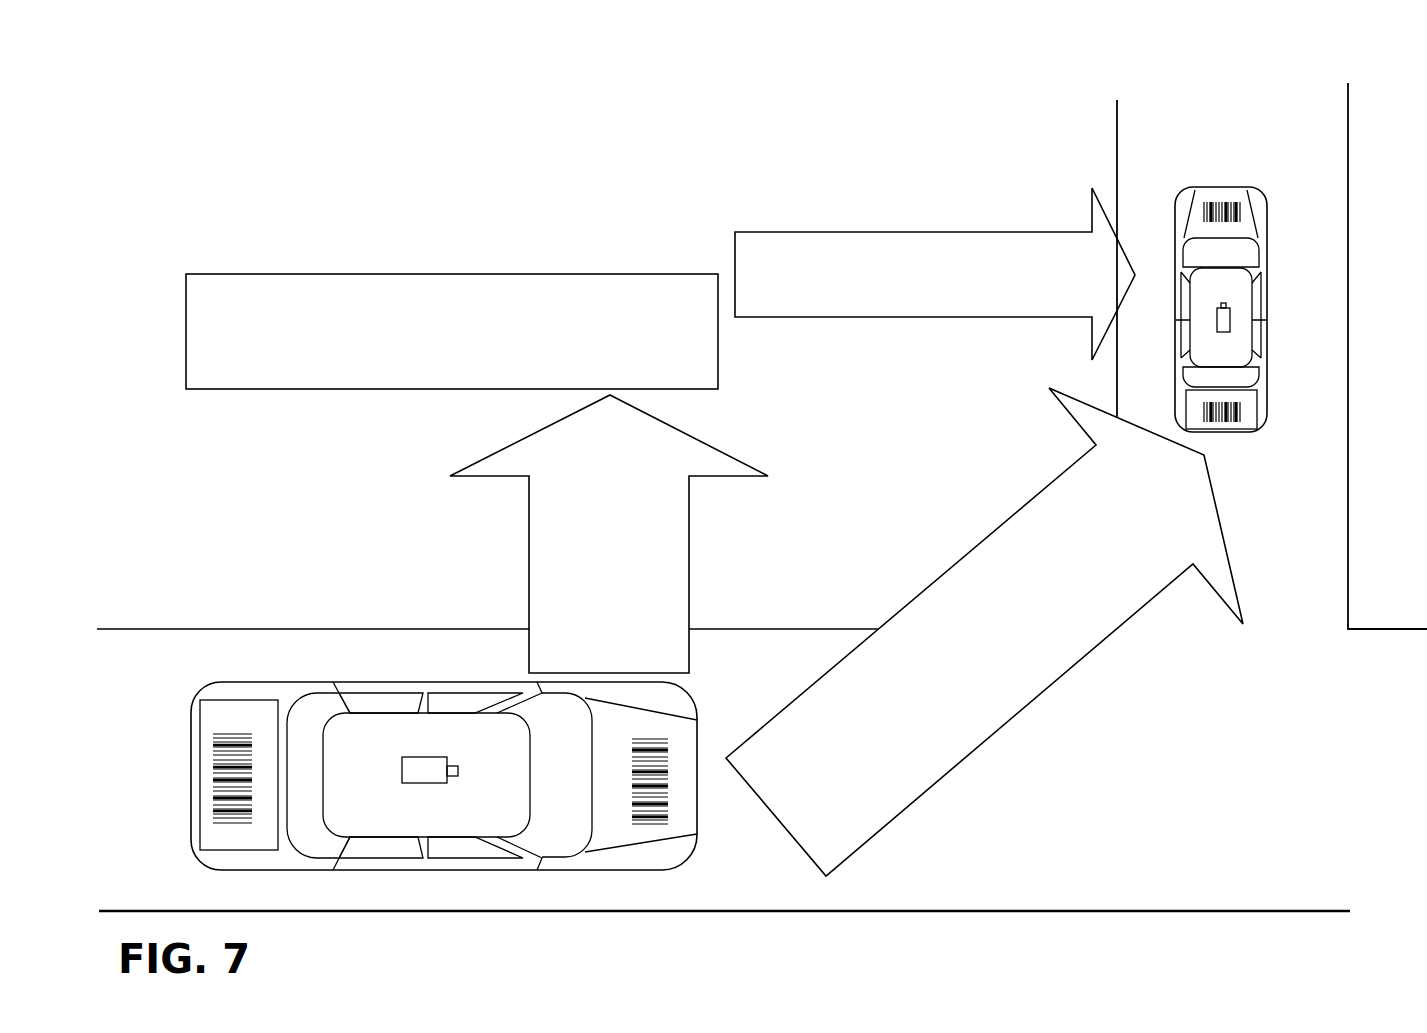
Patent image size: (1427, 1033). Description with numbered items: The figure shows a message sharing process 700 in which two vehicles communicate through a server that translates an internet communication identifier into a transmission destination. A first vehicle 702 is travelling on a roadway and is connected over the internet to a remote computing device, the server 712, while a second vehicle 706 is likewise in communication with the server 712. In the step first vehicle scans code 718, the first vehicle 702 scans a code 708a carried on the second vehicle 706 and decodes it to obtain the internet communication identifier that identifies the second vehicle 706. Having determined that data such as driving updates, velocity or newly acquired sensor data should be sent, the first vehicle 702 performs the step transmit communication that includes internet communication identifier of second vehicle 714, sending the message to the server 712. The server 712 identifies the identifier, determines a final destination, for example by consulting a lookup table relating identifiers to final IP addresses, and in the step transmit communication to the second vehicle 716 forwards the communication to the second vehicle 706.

The message sharing process 700 is at (206, 77).
The first vehicle 702 is at (192, 840).
The second vehicle 706 is at (1280, 315).
The code 708a is at (1243, 402).
The server 712 is at (452, 331).
The transmit communication that includes internet communication identifier of second 714 is at (690, 573).
The transmit communication to the second vehicle 716 is at (863, 231).
The first vehicle scans code 718 is at (1084, 659).